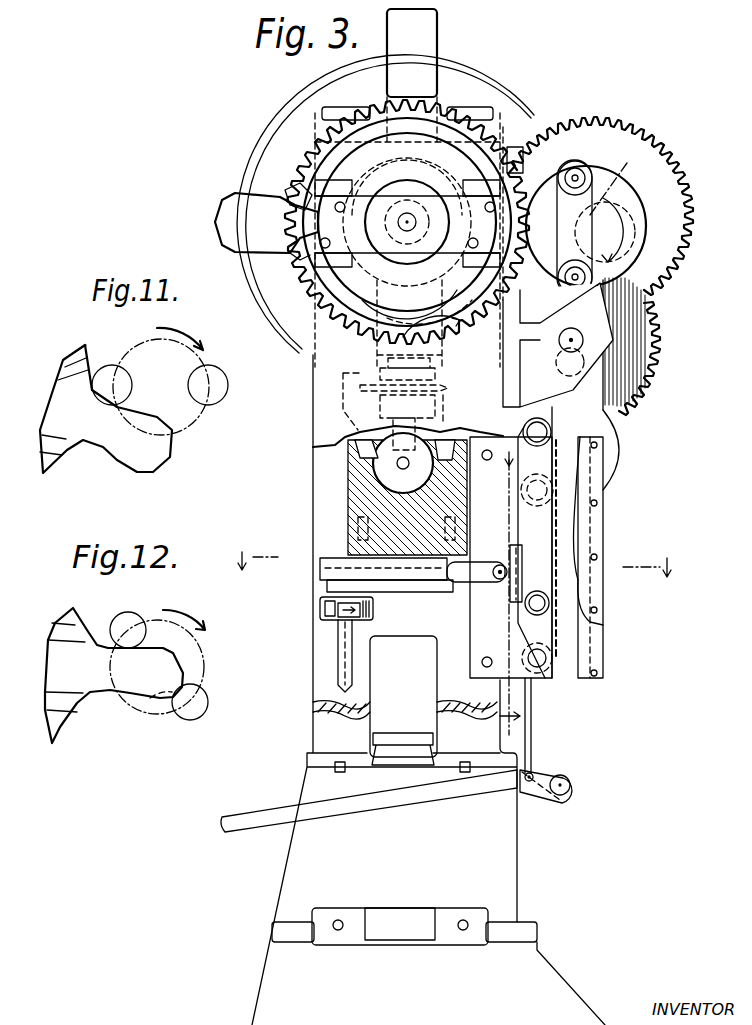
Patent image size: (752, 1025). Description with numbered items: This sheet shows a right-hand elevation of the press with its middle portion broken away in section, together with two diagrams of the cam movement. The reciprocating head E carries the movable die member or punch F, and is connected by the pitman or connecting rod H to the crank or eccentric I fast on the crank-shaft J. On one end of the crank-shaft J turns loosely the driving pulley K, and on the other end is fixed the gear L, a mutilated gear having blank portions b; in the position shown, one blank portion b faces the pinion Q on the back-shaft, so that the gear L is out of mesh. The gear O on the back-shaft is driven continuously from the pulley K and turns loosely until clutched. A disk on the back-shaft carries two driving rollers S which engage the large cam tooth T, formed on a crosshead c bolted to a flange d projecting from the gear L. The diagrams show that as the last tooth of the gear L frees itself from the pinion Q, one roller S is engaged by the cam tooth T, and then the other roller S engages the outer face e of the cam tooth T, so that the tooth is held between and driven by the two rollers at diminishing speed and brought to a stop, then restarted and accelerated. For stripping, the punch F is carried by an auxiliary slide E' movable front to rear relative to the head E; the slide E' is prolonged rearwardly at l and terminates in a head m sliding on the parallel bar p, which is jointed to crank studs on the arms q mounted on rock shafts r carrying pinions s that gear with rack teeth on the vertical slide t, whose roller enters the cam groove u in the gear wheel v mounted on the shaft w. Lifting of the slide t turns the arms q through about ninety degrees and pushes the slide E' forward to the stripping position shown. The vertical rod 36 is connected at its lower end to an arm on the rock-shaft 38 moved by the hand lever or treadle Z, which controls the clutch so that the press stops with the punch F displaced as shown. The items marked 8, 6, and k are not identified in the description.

In FIG. 3, the driving pulley K is at (465, 68).
In FIG. 3, the blank portion b is at (280, 197).
In FIG. 3, the cam tooth T is at (266, 223).
In FIG. 11, the cam tooth T is at (153, 455).
In FIG. 12, the cam tooth T is at (114, 675).
In FIG. 3, the gear L is at (290, 260).
In FIG. 3, the pitman or connecting rod H is at (363, 280).
In FIG. 3, the crank-shaft J is at (380, 192).
In FIG. 3, the crank or eccentric I is at (432, 200).
In FIG. 3, the crosshead c is at (432, 268).
In FIG. 3, the flange d is at (390, 271).
In FIG. 3, the driving pins or rollers S is at (572, 162).
In FIG. 11, the driving pins or rollers S is at (108, 366).
In FIG. 12, the driving pins or rollers S is at (118, 618).
In FIG. 3, the pinion Q is at (618, 180).
In FIG. 3, the gear O is at (688, 212).
In FIG. 3, the gear wheel v is at (648, 318).
In FIG. 3, the cam groove u is at (627, 338).
In FIG. 3, the shaft w is at (567, 343).
In FIG. 3, the reciprocating head E is at (391, 490).
In FIG. 3, the auxiliary slide E' is at (362, 582).
In FIG. 3, the pinion k is at (320, 610).
In FIG. 3, the movable die member F is at (340, 652).
In FIG. 3, the rearward prolongation l is at (480, 575).
In FIG. 3, the head m is at (510, 547).
In FIG. 3, the parallel bar p is at (535, 542).
In FIG. 3, the arms q is at (527, 637).
In FIG. 3, the pinions s is at (520, 445).
In FIG. 3, the slide t is at (580, 630).
In FIG. 3, the rock shafts r is at (534, 725).
In FIG. 3, the section line 8 is at (509, 592).
In FIG. 3, the rod 36 is at (531, 755).
In FIG. 3, the rock-shaft 38 is at (564, 790).
In FIG. 3, the hand lever or treadle Z is at (287, 817).
In FIG. 3, the section line 6 is at (452, 561).
In FIG. 12, the outer face e is at (167, 687).